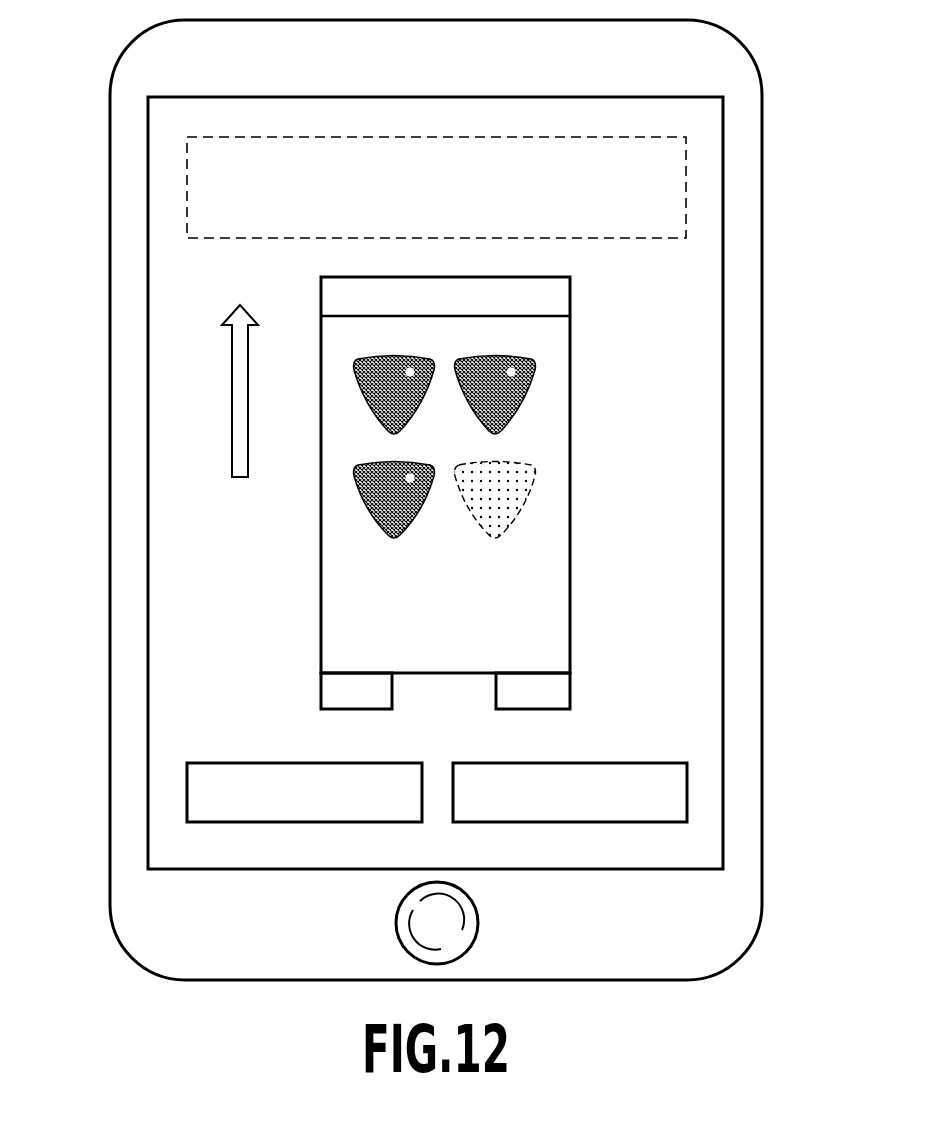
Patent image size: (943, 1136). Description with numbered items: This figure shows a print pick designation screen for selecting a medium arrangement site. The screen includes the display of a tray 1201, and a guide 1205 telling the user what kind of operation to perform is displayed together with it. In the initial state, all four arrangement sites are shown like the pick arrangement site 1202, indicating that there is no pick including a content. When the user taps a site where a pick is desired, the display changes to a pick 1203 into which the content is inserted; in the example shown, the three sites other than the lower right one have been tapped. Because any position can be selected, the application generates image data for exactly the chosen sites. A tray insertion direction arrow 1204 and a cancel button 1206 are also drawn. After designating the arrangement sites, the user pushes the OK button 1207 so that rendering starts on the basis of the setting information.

The tray 1201 is at (571, 352).
The pick arrangement site 1202 is at (515, 517).
The pick 1203 is at (395, 538).
The tray insertion direction arrow 1204 is at (232, 420).
The guide 1205 is at (187, 180).
The cancel button 1206 is at (243, 762).
The OK button 1207 is at (633, 762).